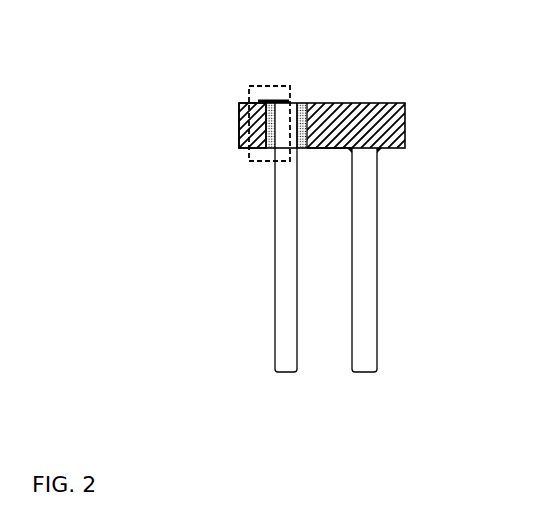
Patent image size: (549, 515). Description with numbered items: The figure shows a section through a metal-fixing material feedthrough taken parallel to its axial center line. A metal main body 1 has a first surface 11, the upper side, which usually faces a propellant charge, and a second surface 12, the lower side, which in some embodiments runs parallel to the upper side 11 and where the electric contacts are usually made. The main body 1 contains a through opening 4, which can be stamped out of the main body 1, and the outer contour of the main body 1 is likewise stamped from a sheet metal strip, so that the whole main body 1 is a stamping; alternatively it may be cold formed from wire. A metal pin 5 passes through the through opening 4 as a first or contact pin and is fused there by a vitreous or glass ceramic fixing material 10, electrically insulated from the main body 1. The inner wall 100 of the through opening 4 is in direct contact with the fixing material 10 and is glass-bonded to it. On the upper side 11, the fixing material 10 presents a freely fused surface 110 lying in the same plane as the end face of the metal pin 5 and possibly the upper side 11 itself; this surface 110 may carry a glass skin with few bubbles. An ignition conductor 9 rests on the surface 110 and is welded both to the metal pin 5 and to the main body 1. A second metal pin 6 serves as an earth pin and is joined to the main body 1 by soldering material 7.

The main body 1 is at (405, 128).
The through opening 4 is at (238, 117).
The metal pin 5 is at (275, 352).
The second metal pin 6 is at (350, 352).
The soldering material 7 is at (379, 153).
The ignition conductor 9 is at (262, 101).
The fixing material 10 is at (264, 141).
The first surface 11 is at (377, 100).
The second surface 12 is at (320, 155).
The inner wall 100 is at (238, 136).
The surface 110 is at (302, 103).